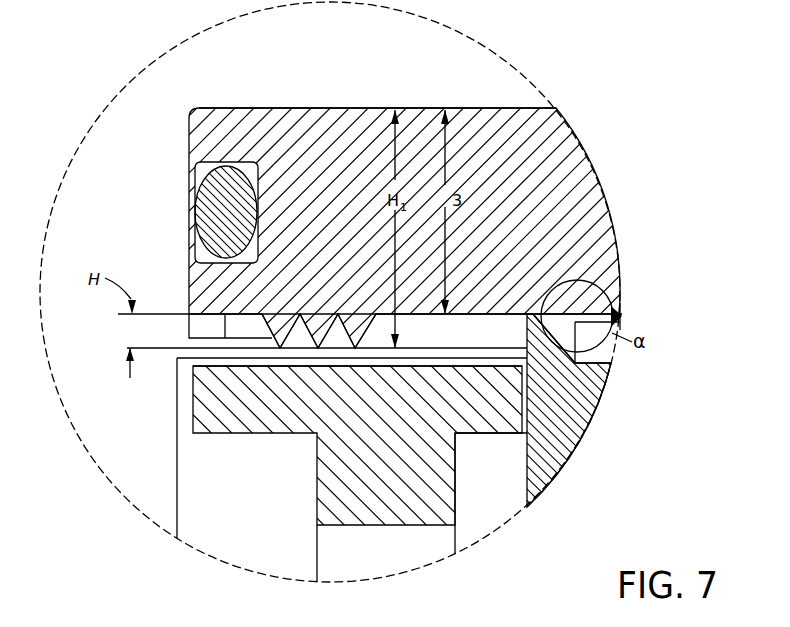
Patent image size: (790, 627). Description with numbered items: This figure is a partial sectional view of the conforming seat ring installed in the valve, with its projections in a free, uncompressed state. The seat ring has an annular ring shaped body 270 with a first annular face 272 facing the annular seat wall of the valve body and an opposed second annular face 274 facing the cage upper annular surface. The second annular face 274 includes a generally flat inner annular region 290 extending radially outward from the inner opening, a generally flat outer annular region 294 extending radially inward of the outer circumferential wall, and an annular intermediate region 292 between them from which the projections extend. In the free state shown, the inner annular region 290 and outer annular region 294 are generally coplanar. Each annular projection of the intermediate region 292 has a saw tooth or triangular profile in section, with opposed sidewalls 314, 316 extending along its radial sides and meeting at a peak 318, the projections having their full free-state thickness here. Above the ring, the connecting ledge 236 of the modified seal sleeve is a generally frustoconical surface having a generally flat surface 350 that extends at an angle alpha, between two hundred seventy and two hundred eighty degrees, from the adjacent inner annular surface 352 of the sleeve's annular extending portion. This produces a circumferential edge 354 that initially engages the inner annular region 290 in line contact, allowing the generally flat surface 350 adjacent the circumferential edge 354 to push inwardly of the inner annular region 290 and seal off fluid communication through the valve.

The connecting ledge 236 is at (541, 312).
The annular ring shaped body 270 is at (567, 143).
The first annular face 272 is at (435, 108).
The second annular face 274 is at (363, 367).
The inner annular region 290 is at (478, 405).
The teeth 292 is at (397, 314).
The outer annular region 294 is at (225, 314).
The sidewall 314 is at (415, 314).
The sidewall 316 is at (378, 352).
The peak 318 is at (388, 368).
The generally flat surface 350 is at (563, 285).
The inner annular surface 352 is at (575, 357).
The circumferential edge 354 is at (618, 250).